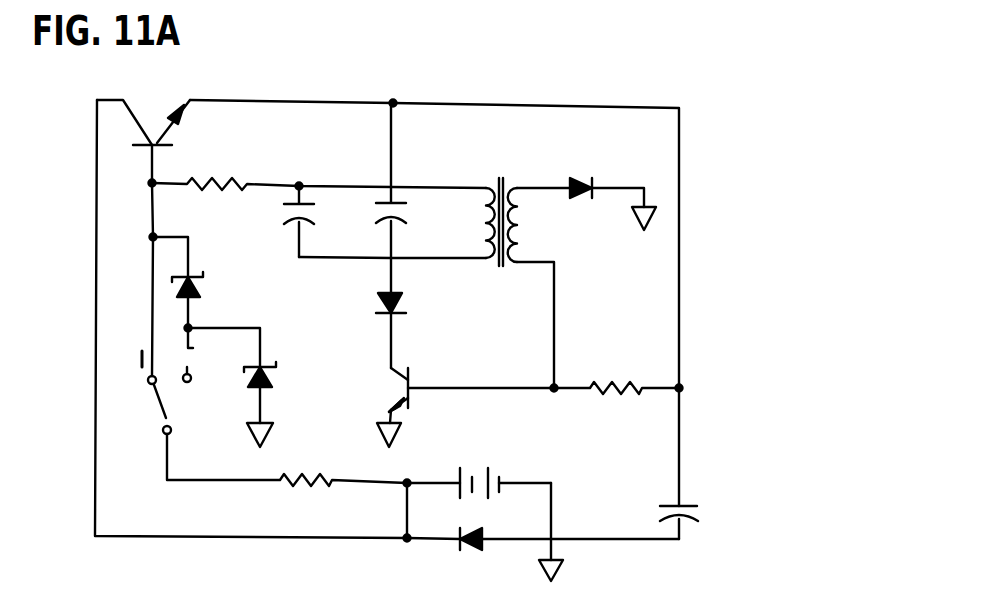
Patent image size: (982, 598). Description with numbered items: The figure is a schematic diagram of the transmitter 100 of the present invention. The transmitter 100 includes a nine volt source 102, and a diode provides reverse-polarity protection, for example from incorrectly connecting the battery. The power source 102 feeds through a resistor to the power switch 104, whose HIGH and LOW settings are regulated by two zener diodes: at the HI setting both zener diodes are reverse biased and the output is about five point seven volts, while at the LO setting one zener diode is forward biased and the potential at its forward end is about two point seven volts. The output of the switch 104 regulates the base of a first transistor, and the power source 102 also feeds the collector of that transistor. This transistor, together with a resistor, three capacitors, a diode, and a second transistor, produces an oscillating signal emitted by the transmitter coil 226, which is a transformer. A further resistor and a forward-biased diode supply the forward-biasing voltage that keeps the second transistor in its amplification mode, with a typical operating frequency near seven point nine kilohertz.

The transmitter 100 is at (612, 74).
The transmitter coil 226 is at (515, 233).
The power switch 104 is at (160, 413).
The 9 volt source 102 is at (459, 470).